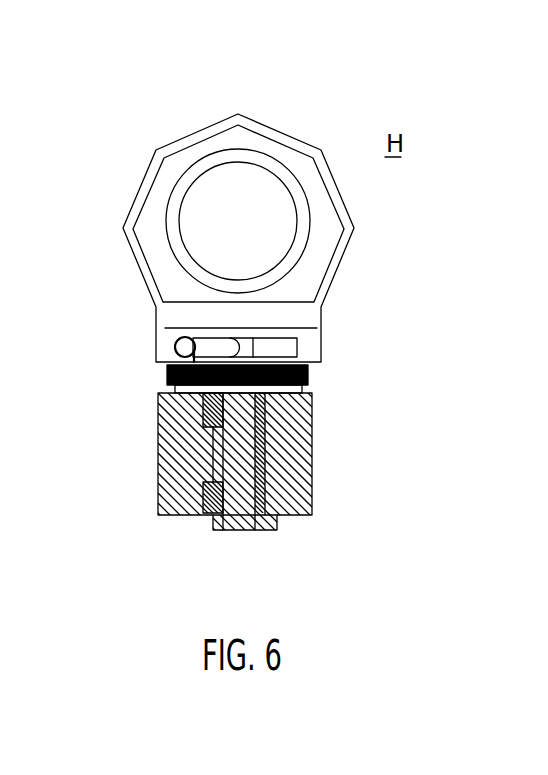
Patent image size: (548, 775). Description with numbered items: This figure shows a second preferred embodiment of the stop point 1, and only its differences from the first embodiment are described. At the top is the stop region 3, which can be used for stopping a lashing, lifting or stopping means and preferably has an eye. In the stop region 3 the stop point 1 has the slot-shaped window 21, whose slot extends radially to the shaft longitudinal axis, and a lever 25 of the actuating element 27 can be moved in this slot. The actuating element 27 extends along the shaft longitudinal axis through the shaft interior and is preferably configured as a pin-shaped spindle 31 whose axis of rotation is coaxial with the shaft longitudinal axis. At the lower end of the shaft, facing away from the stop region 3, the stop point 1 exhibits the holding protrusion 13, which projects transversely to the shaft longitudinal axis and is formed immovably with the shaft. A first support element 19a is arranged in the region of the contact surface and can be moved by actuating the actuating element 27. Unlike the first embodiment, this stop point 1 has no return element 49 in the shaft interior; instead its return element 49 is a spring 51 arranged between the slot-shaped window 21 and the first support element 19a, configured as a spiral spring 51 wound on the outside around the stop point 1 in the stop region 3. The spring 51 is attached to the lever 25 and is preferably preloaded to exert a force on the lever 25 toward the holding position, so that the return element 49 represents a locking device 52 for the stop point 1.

The stop point 1 is at (154, 54).
The stop region 3 is at (93, 111).
The holding protrusion 13 is at (264, 533).
The first support element 19a is at (212, 409).
The slot-shaped window 21 is at (294, 347).
The lever 25 is at (218, 345).
The actuating element 27 is at (235, 465).
The spindle 31 is at (237, 532).
The return element 49 is at (306, 383).
The spring 51 is at (306, 383).
The locking device 52 is at (310, 373).